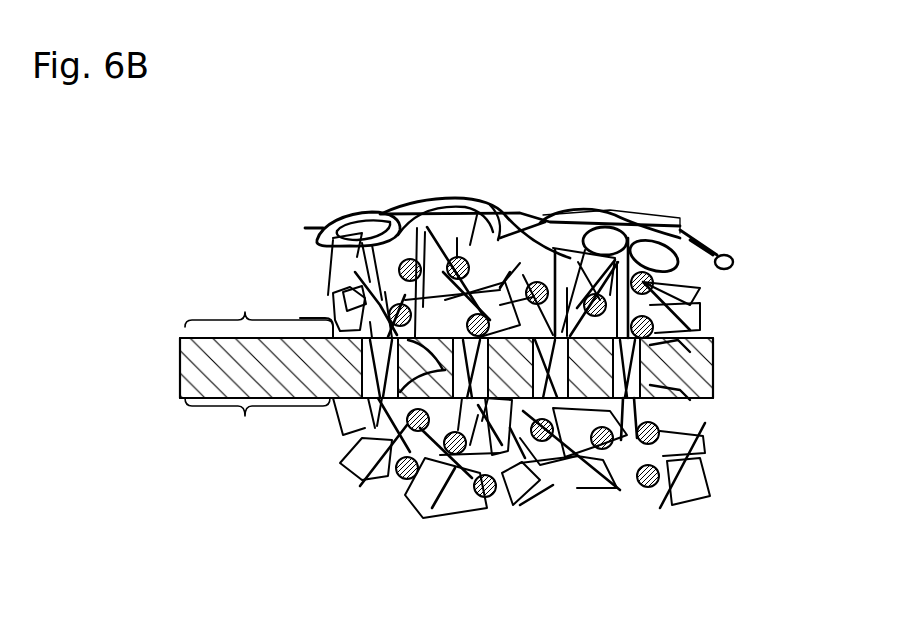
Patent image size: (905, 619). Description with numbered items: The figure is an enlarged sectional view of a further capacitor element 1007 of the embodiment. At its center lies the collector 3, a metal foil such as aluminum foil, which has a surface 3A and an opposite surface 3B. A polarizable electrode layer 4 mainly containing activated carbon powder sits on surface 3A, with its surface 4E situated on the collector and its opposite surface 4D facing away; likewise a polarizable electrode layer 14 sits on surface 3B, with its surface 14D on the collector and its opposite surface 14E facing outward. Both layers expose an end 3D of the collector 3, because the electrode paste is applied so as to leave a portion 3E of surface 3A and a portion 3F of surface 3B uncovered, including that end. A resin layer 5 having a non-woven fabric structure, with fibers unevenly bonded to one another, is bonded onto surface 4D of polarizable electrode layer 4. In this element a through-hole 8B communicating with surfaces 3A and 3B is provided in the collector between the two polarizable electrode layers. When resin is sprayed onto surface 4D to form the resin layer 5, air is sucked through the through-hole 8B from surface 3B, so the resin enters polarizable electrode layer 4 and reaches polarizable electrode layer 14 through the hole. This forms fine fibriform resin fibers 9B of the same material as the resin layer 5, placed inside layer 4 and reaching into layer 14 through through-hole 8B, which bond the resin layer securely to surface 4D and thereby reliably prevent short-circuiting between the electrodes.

The capacitor element 1007 is at (722, 220).
The collector 3 is at (457, 367).
The surface 3A is at (227, 338).
The surface 3B is at (212, 398).
The end 3D is at (188, 372).
The portion 3E is at (259, 300).
The portion 3F is at (257, 429).
The polarizable electrode layer 4 is at (728, 275).
The surface 4D is at (383, 212).
The surface 4E is at (417, 230).
The resin layer 5 is at (557, 225).
The polarizable electrode layer 14 is at (727, 400).
The surface 14D is at (470, 445).
The surface 14E is at (413, 508).
The through-hole 8B is at (550, 432).
The resin fiber 9B is at (621, 400).